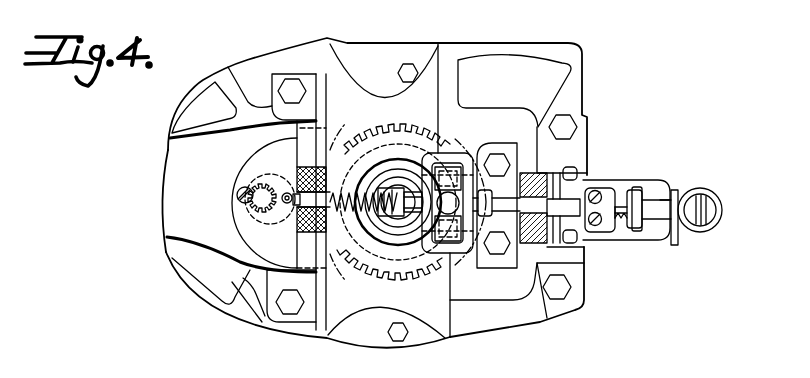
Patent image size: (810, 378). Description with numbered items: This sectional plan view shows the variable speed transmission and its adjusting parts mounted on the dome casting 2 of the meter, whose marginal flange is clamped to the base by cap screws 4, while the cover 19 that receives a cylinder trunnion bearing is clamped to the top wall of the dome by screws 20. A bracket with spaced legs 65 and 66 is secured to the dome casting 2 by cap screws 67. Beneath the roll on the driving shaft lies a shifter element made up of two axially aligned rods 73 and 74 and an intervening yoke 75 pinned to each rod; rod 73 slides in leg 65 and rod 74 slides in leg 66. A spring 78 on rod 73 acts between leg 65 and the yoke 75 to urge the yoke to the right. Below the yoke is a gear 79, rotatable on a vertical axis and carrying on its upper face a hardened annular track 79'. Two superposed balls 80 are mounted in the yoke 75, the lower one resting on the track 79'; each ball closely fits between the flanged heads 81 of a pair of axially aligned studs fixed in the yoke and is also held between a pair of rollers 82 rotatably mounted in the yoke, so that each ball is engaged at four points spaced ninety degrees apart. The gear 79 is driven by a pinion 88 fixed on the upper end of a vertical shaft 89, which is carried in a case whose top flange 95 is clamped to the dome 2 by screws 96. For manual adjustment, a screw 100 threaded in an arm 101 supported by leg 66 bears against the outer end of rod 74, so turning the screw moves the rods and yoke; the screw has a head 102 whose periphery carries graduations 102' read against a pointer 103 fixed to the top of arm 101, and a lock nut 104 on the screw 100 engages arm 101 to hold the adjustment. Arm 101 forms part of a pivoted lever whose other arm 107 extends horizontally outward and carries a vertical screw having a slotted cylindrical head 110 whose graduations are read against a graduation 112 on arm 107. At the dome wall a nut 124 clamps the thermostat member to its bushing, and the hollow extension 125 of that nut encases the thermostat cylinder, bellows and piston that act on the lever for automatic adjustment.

The dome casting 2 is at (192, 113).
The cap screws 4 is at (566, 125).
The cover 19 is at (355, 58).
The screws 20 is at (410, 72).
The leg 65 is at (321, 119).
The leg 66 is at (528, 158).
The cap screws 67 is at (290, 88).
The rod 73 is at (323, 262).
The rod 74 is at (505, 215).
The yoke 75 is at (455, 237).
The spring 78 is at (372, 190).
The gear 79 is at (408, 190).
The annular track 79' is at (389, 276).
The balls 80 is at (447, 170).
The flanged heads 81 is at (499, 160).
The rollers 82 is at (437, 163).
The pinion 88 is at (266, 217).
The vertical shaft 89 is at (283, 197).
The top flange 95 is at (248, 209).
The screws 96 is at (238, 194).
The screw 100 is at (633, 186).
The arm 101 is at (606, 190).
The head 102 is at (640, 226).
The graduations 102' is at (672, 173).
The pointer 103 is at (608, 232).
The lock nut 104 is at (620, 194).
The arm 107 is at (678, 238).
The slotted cylindrical head 110 is at (707, 212).
The graduation 112 is at (674, 198).
The nut 124 is at (560, 243).
The hollow extension 125 is at (640, 240).